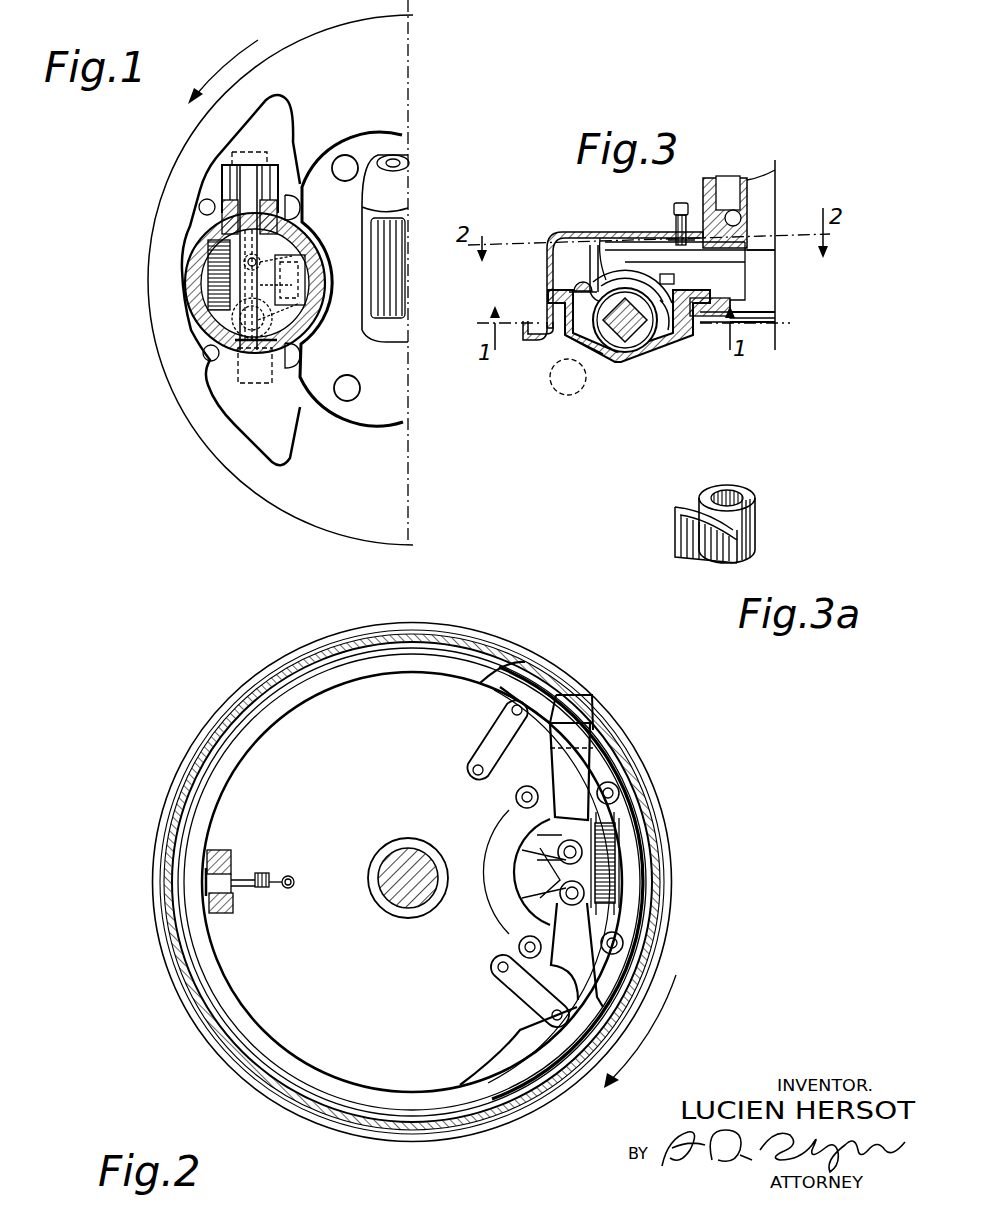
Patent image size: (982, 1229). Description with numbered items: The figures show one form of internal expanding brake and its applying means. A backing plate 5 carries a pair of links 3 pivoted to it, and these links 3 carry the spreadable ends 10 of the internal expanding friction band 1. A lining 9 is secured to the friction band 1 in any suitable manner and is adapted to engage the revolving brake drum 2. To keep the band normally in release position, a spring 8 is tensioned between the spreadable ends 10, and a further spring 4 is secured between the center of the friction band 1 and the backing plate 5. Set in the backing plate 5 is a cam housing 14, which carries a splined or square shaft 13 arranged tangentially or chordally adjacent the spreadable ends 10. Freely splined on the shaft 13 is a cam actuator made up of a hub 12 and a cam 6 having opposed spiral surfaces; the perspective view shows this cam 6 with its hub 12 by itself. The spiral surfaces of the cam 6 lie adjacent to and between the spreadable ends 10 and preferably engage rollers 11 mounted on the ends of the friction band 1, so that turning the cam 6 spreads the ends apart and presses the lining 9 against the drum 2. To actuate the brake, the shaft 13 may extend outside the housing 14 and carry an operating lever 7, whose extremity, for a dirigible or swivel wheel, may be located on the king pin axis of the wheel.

In FIG. 3, the internal expanding friction band 1 is at (634, 252).
In FIG. 2, the internal expanding friction band 1 is at (477, 666).
In FIG. 3, the brake drum 2 is at (538, 262).
In FIG. 2, the brake drum 2 is at (198, 752).
In FIG. 2, the links 3 is at (497, 735).
In FIG. 2, the spring 4 is at (268, 876).
In FIG. 1, the backing plate 5 is at (240, 468).
In FIG. 3, the backing plate 5 is at (704, 320).
In FIG. 2, the backing plate 5 is at (228, 963).
In FIG. 1, the cam 6 is at (313, 267).
In FIG. 3, the cam 6 is at (676, 322).
In FIG. 3A, the cam 6 is at (695, 538).
In FIG. 2, the cam 6 is at (532, 873).
In FIG. 3, the operating lever 7 is at (574, 394).
In FIG. 1, the spring 8 is at (205, 258).
In FIG. 3, the spring 8 is at (583, 280).
In FIG. 2, the spring 8 is at (617, 862).
In FIG. 3, the lining 9 is at (595, 247).
In FIG. 2, the lining 9 is at (593, 738).
In FIG. 2, the spreadable ends 10 is at (573, 770).
In FIG. 2, the rollers 11 is at (553, 847).
In FIG. 1, the hub 12 is at (300, 290).
In FIG. 3, the hub 12 is at (647, 338).
In FIG. 3A, the hub 12 is at (745, 503).
In FIG. 1, the splined or square shaft 13 is at (313, 327).
In FIG. 3, the splined or square shaft 13 is at (620, 340).
In FIG. 1, the cam housing 14 is at (298, 238).
In FIG. 3, the cam housing 14 is at (579, 328).
In FIG. 2, the cam housing 14 is at (537, 846).